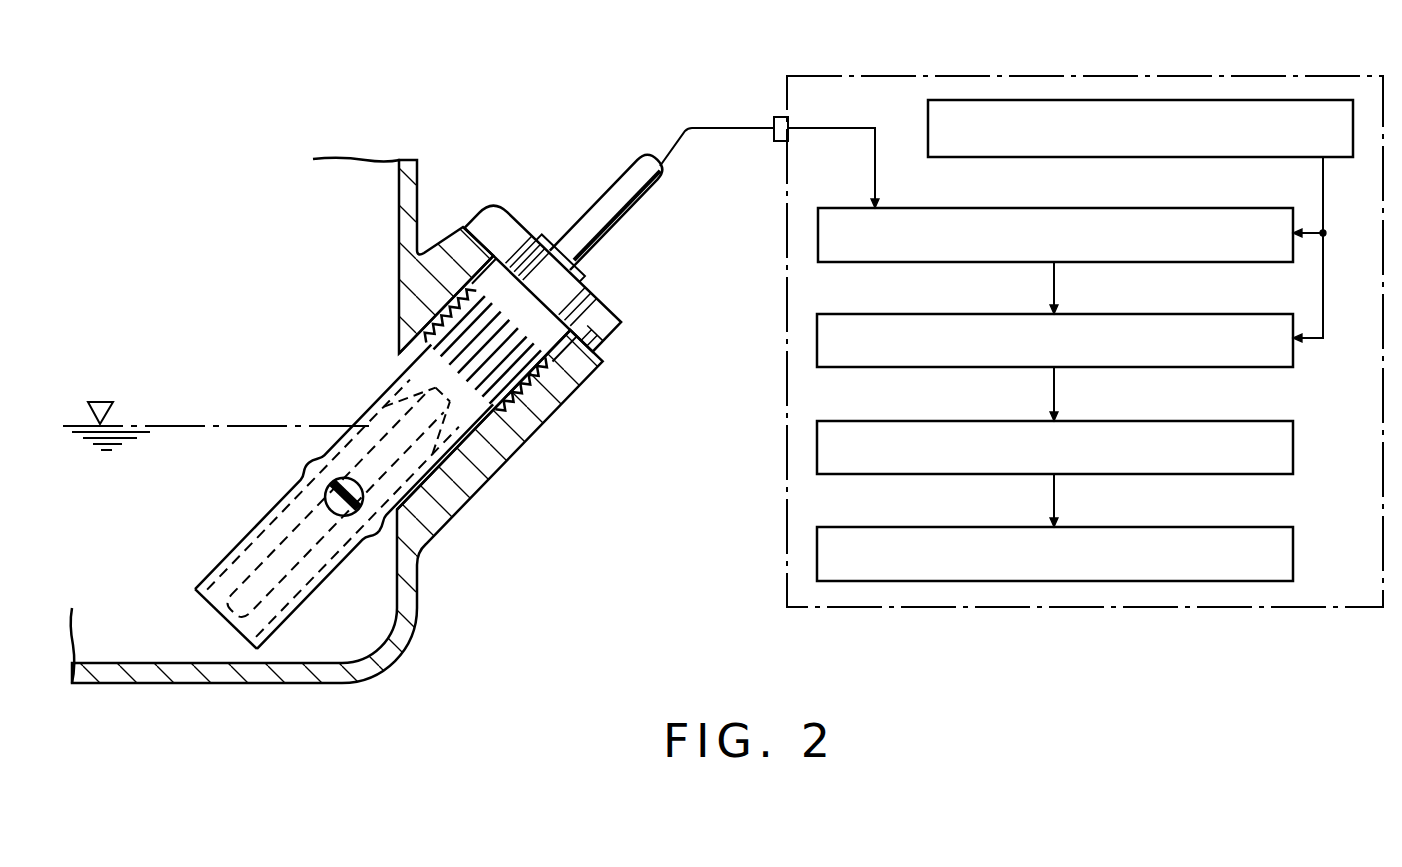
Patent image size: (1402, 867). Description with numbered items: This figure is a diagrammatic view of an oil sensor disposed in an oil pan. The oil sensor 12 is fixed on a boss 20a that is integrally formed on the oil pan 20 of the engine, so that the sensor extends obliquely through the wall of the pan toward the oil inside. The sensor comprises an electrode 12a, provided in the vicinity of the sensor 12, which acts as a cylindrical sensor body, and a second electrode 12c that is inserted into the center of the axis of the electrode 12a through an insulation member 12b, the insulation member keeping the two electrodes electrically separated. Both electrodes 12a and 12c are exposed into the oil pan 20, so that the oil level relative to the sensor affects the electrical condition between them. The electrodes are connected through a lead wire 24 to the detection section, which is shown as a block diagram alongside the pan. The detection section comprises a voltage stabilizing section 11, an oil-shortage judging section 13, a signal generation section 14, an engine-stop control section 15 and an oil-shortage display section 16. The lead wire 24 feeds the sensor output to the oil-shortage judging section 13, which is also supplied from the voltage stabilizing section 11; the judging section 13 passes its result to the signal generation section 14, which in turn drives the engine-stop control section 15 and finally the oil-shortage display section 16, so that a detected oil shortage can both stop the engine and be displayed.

The voltage stabilizing section 11 is at (1203, 99).
The oil sensor 12 is at (612, 279).
The electrode 12a is at (243, 538).
The insulation member 12b is at (383, 396).
The electrode 12c is at (278, 583).
The oil-shortage judging section 13 is at (1180, 206).
The signal generation section 14 is at (1178, 313).
The engine-stop control section 15 is at (1178, 420).
The oil-shortage display section 16 is at (1178, 526).
The oil pan 20 is at (409, 613).
The boss 20a is at (399, 353).
The lead wire 24 is at (612, 193).